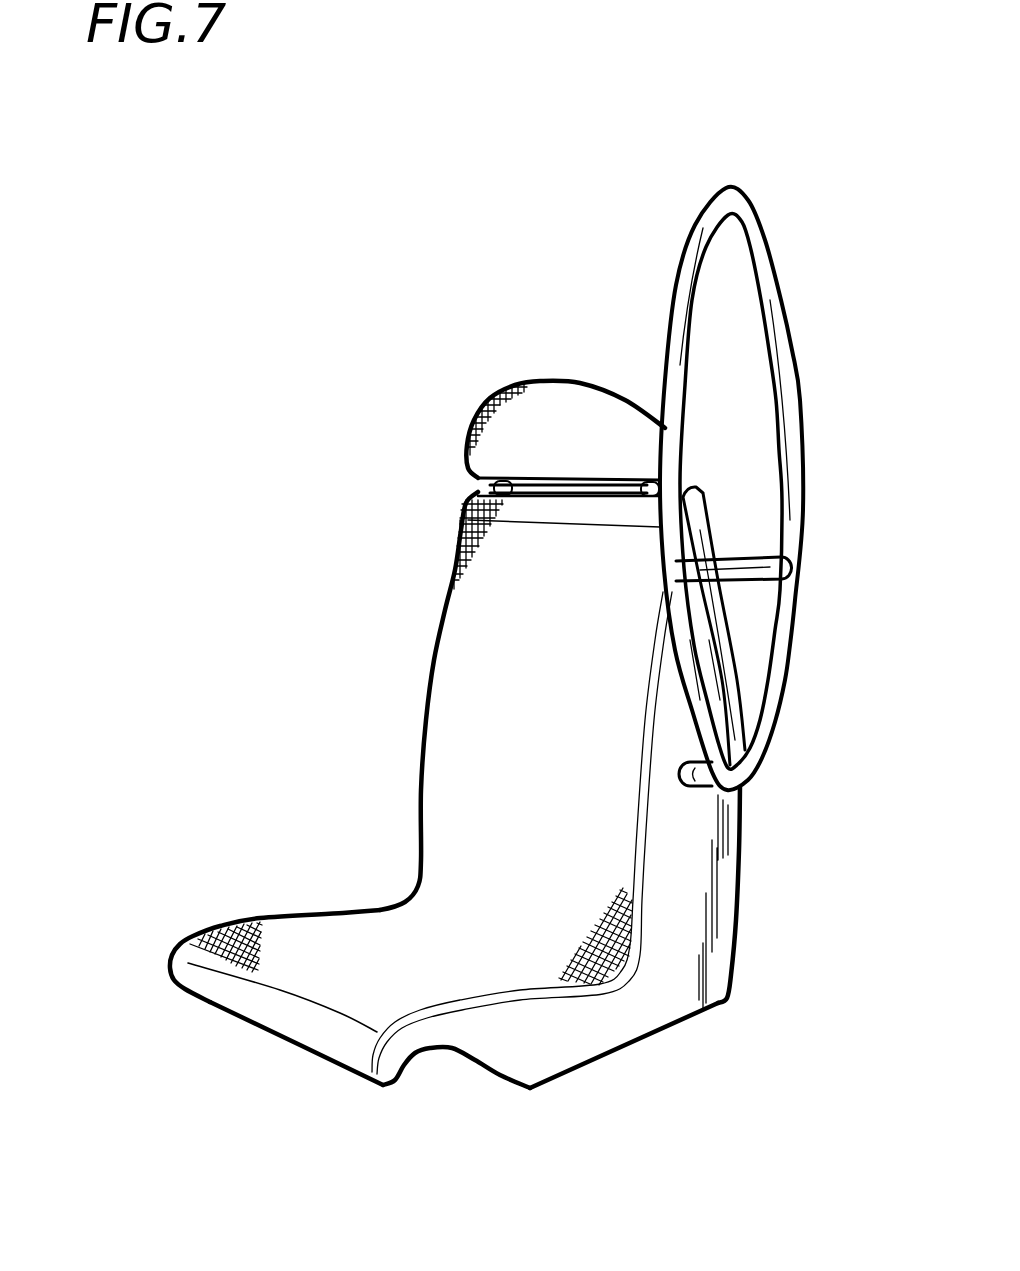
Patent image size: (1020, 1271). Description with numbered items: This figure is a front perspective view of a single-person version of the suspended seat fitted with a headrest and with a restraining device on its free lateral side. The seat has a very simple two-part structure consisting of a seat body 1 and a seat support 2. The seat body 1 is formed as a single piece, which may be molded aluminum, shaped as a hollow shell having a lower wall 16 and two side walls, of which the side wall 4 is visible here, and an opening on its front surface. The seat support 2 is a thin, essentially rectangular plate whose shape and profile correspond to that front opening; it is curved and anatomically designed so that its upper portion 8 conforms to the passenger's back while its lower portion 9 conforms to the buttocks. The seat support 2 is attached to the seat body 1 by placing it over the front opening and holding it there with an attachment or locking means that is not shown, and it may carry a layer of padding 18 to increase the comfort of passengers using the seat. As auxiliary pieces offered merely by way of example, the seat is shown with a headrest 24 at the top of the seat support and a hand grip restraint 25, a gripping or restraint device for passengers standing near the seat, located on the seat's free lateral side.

The seat body 1 is at (702, 1032).
The seat support 2 is at (487, 674).
The side wall 4 is at (690, 870).
The upper portion 8 is at (497, 588).
The lower portion 9 is at (254, 946).
The lower wall 16 is at (592, 1082).
The layer of padding 18 is at (366, 928).
The headrest 24 is at (533, 372).
The hand grip restraint 25 is at (778, 224).